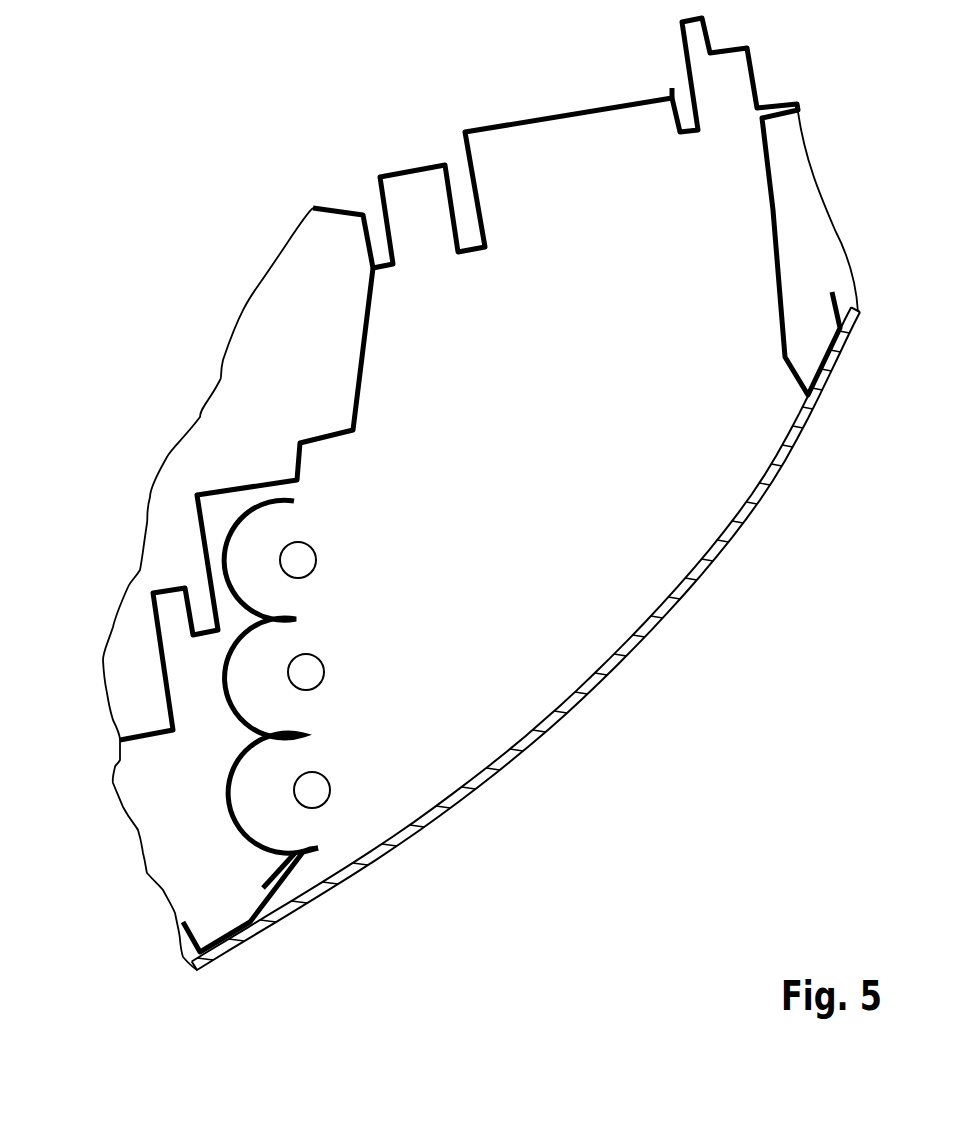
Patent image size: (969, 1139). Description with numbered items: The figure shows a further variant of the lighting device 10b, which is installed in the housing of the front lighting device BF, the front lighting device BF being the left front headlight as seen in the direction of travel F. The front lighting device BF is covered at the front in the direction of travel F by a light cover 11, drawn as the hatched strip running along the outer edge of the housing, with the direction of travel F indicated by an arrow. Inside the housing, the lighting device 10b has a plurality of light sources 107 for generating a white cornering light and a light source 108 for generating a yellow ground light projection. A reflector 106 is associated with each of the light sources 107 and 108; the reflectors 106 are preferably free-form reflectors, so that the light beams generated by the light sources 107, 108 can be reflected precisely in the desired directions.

The lighting device 10b is at (402, 574).
The light cover 11 is at (665, 605).
The reflectors 106 is at (257, 518).
The light sources 107 is at (296, 560).
The light source 108 is at (305, 672).
The front lighting device BF is at (728, 785).
The direction of travel F is at (606, 890).